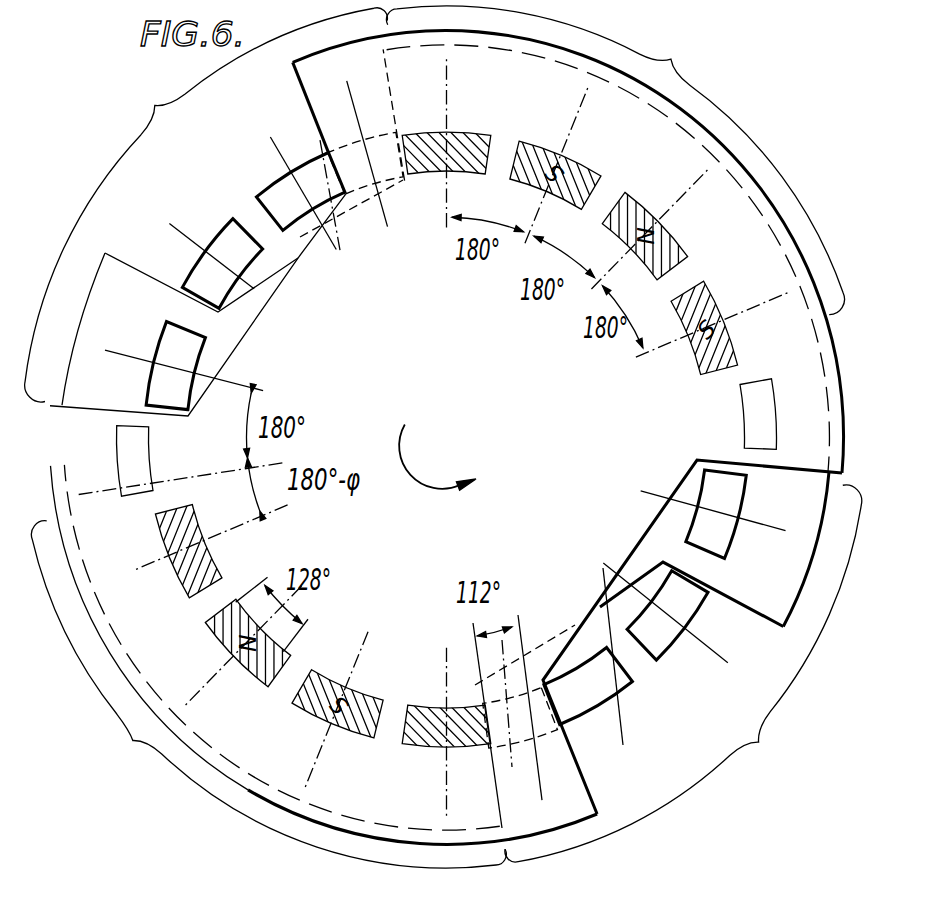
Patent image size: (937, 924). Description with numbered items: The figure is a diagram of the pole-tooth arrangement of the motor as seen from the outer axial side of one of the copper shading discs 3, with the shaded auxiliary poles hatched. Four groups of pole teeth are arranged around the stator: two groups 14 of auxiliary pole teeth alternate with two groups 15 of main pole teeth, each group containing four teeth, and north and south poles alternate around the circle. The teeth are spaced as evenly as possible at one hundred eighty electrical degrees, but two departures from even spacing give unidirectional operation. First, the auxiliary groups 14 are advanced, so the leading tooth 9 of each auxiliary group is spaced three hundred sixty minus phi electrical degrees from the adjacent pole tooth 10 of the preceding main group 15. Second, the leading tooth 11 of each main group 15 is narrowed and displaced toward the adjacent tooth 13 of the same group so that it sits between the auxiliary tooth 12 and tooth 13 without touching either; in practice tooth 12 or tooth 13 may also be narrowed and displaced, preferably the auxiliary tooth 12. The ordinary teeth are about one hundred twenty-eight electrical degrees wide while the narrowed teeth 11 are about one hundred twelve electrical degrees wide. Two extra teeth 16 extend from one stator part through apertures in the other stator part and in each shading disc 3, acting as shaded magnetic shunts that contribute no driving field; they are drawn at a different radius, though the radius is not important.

The copper shading disc 3 is at (326, 168).
The leading tooth of auxiliary group 9 is at (193, 547).
The adjacent pole tooth of main group 10 is at (427, 425).
The leading tooth of main group 11 is at (437, 438).
The auxiliary tooth 12 is at (440, 439).
The adjacent tooth of main group 13 is at (445, 425).
The group of auxiliary pole teeth 14 is at (437, 437).
The group of main pole teeth 15 is at (443, 435).
The extra tooth 16 is at (429, 406).